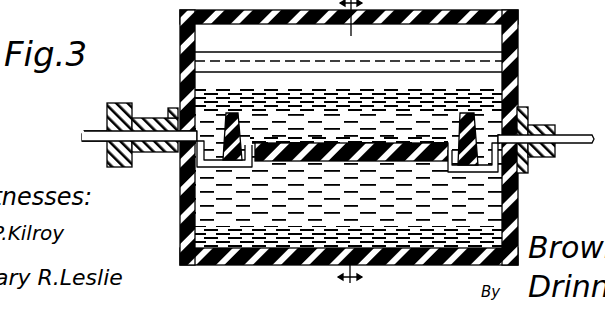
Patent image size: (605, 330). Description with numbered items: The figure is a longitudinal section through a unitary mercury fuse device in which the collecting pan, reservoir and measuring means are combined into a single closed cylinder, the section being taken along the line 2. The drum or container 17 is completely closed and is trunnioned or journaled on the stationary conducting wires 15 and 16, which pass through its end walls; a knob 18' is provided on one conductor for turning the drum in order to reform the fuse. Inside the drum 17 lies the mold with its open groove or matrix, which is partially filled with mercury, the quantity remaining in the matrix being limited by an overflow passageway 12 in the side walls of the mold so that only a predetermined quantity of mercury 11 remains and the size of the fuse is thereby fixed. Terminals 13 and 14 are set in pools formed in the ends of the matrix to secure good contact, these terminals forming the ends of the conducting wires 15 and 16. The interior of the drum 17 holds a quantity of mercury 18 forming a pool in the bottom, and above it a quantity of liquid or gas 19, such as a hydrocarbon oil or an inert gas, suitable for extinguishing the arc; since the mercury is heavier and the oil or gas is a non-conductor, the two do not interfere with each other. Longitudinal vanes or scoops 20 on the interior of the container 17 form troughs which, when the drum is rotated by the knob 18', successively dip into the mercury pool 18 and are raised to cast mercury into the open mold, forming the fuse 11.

The section line 2- 2 is at (350, 148).
The mercury fuse 11 is at (402, 162).
The passageway 12 is at (337, 161).
The terminal 13 is at (250, 167).
The terminal 14 is at (452, 172).
The conducting wire 15 is at (93, 131).
The conducting wire 16 is at (580, 135).
The drum 17 is at (517, 62).
The mercury pool 18 is at (349, 150).
The knob 18' is at (139, 121).
The arc extinguishing liquid or gas 19 is at (518, 96).
The vane 20 is at (480, 68).